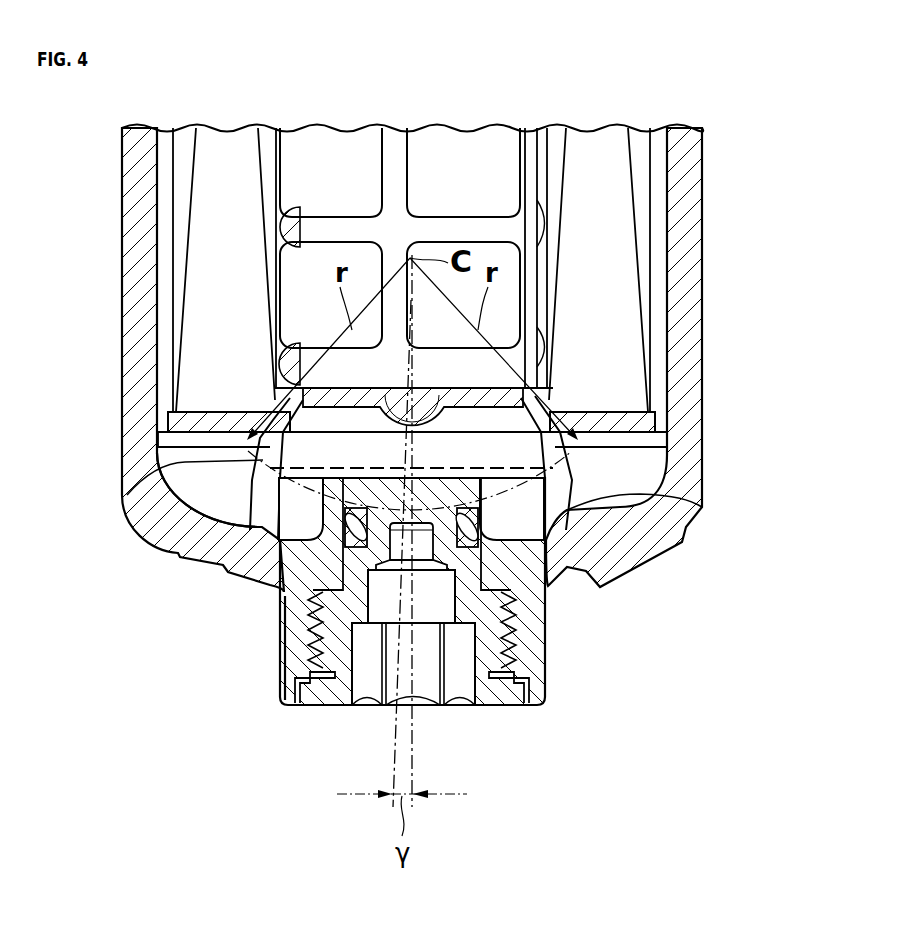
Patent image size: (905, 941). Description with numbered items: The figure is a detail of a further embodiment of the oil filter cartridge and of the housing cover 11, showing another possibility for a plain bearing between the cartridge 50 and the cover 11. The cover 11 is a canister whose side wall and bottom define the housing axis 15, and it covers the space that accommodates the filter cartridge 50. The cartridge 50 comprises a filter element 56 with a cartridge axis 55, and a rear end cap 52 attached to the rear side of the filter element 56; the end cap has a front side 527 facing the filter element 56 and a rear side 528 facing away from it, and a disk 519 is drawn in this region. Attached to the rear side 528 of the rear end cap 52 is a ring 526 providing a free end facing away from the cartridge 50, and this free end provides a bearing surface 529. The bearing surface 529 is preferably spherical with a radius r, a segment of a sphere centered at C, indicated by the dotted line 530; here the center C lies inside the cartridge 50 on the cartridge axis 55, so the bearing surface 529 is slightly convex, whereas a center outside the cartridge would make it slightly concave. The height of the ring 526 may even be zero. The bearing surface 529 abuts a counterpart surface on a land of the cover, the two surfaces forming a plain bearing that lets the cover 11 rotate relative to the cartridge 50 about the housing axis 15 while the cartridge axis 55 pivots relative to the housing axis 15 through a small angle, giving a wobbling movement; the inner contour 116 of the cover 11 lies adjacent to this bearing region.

The housing cover 11 is at (703, 462).
The housing axis 15 is at (417, 750).
The filter cartridge 50 is at (652, 298).
The rear end cap 52 is at (652, 420).
The cartridge axis 55 is at (395, 750).
The filter element 56 is at (669, 265).
The inner contour of housing 116 is at (605, 506).
The disk 519 is at (455, 472).
The ring 526 is at (127, 497).
The front side of rear end cap 527 is at (598, 405).
The rear side of rear end cap 528 is at (170, 455).
The bearing surface 529 is at (543, 585).
The dotted line indicating sphere 530 is at (272, 585).